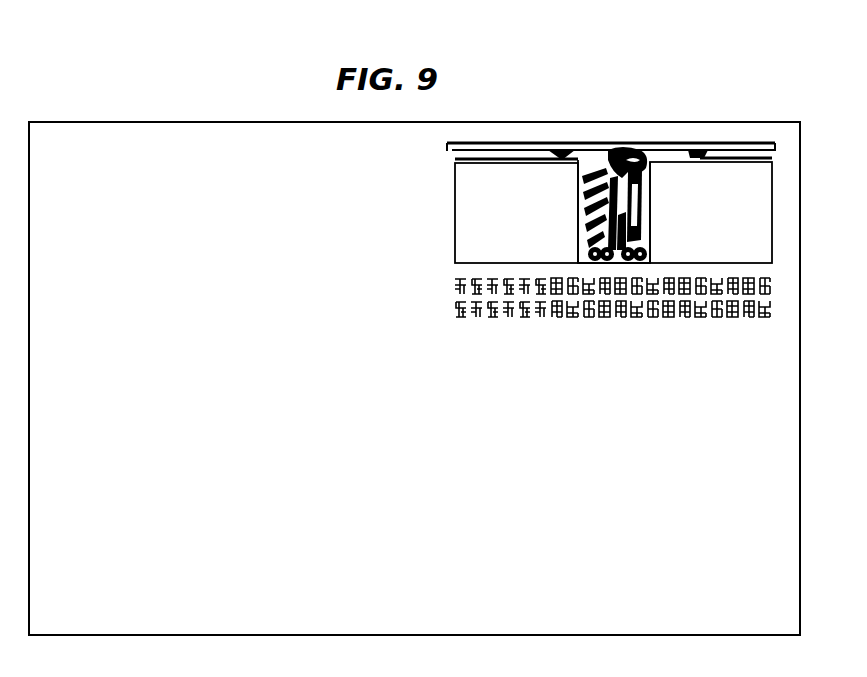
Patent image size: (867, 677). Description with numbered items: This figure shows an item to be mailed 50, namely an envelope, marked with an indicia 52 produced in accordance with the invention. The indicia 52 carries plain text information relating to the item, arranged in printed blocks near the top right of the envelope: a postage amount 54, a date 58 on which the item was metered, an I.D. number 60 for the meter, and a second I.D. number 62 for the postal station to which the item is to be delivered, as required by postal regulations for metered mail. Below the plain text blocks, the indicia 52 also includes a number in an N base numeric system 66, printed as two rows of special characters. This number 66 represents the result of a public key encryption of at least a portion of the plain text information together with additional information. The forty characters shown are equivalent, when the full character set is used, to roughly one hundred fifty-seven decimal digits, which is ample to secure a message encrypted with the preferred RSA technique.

The item to be mailed 50 is at (660, 439).
The indicia 52 is at (428, 275).
The postage amount 54 is at (764, 225).
The date 58 is at (470, 202).
The I.D. number 60 is at (462, 230).
The second I.D. number 62 is at (488, 176).
The number in an N base numeric system 66 is at (528, 334).